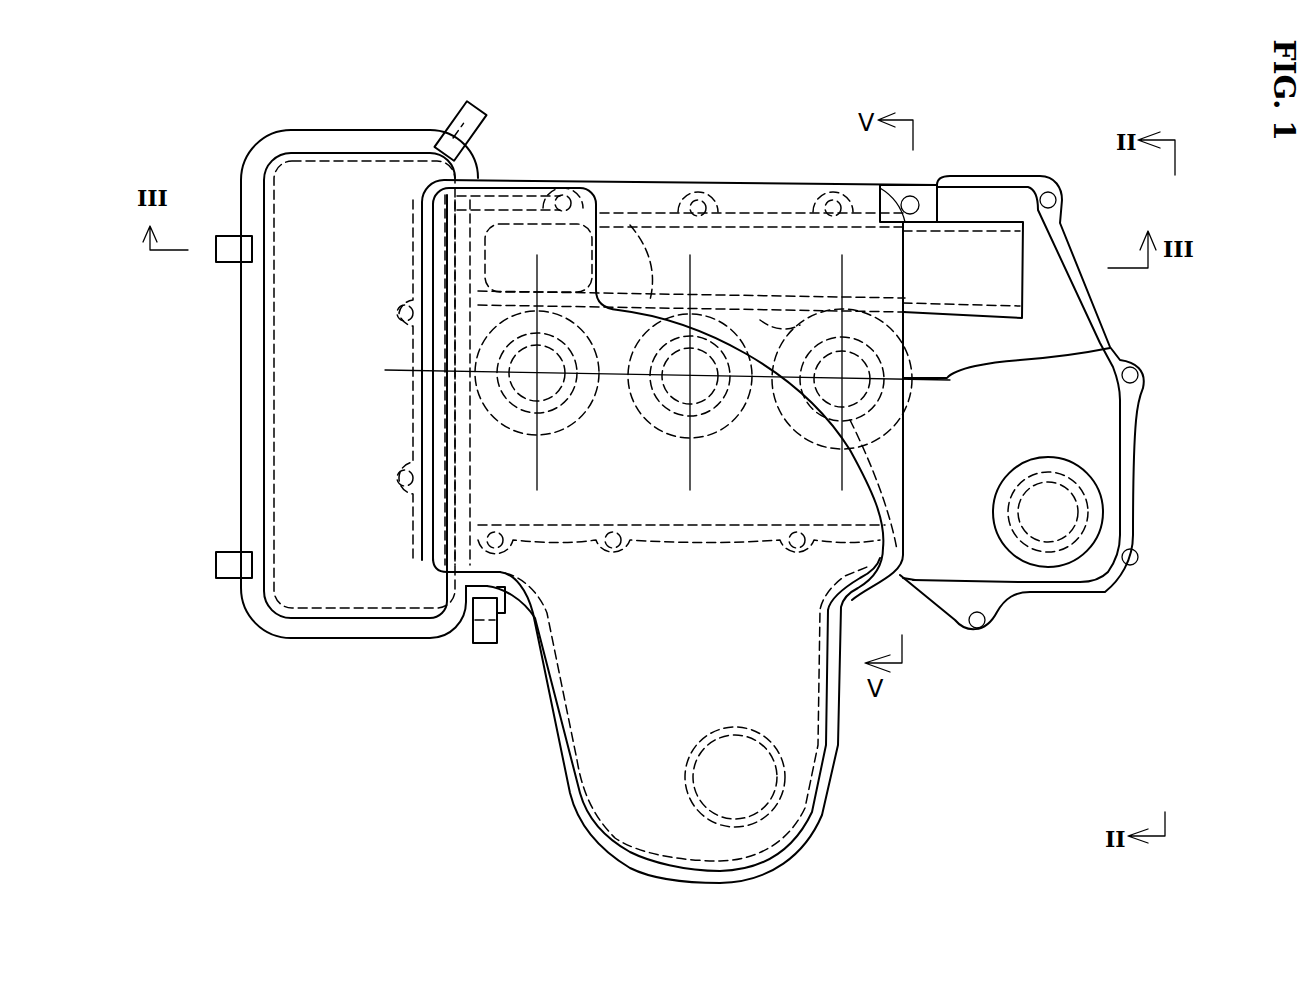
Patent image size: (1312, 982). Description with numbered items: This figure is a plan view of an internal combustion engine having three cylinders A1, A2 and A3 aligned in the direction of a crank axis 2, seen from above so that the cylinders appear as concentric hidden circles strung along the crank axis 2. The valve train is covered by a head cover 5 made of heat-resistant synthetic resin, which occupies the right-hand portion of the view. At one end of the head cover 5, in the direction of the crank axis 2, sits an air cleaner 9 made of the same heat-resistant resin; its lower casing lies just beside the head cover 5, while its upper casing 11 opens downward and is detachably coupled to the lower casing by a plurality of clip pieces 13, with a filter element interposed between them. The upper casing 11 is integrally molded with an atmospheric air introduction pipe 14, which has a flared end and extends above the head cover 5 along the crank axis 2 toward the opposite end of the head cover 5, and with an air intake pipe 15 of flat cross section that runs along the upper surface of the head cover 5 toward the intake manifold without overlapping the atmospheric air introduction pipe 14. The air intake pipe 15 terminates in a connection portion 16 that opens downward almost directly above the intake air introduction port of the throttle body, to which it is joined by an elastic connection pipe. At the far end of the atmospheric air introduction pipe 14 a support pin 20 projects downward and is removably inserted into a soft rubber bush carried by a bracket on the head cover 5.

The crank axis 2 is at (1113, 348).
The head cover 5 is at (1110, 462).
The air cleaner 9 is at (298, 112).
The upper casing 11 is at (355, 190).
The clip pieces 13 is at (228, 562).
The atmospheric air introduction pipe 14 is at (1000, 245).
The air intake pipe 15 is at (607, 708).
The connection portion 16 is at (780, 800).
The support pin 20 is at (912, 200).
The cylinder A1 is at (584, 332).
The cylinder A2 is at (712, 336).
The cylinder A3 is at (886, 362).